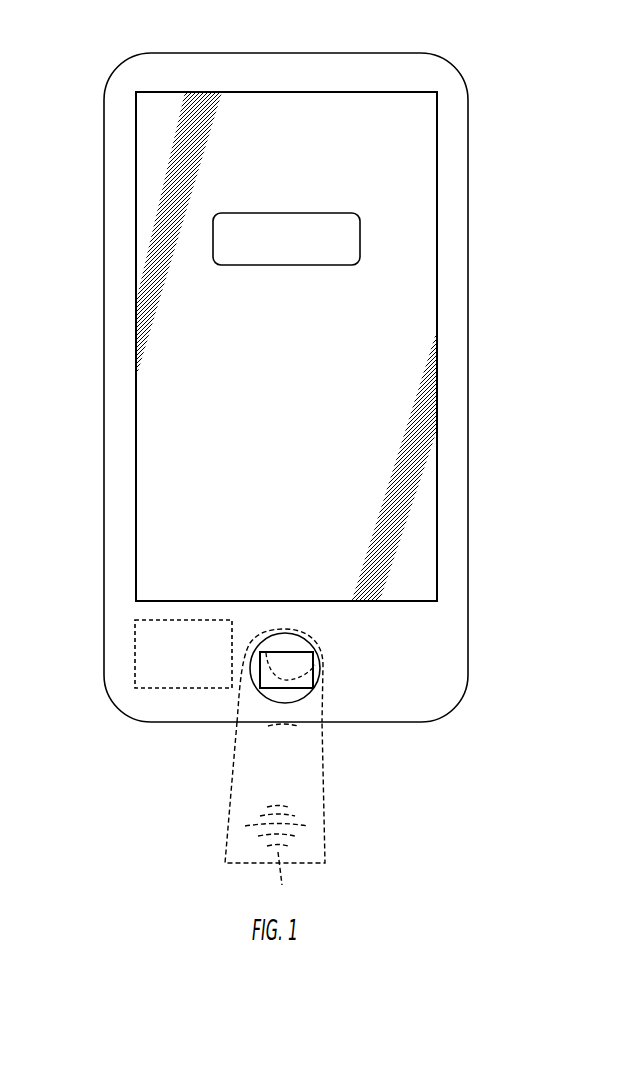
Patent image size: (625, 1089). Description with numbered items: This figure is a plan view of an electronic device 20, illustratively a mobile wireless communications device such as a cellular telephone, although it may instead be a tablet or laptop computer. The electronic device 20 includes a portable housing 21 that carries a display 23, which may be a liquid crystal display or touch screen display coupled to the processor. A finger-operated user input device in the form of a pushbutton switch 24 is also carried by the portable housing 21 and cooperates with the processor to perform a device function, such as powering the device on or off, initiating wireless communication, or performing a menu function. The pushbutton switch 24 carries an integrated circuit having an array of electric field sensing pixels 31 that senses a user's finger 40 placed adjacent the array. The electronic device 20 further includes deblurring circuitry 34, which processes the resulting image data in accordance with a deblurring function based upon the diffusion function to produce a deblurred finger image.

The electronic device 20 is at (90, 71).
The portable housing 21 is at (104, 182).
The display 23 is at (138, 218).
The pushbutton switch 24 is at (314, 690).
The array of electric field sensing pixels 31 is at (314, 676).
The deblurring circuitry 34 is at (135, 632).
The finger 40 is at (236, 748).